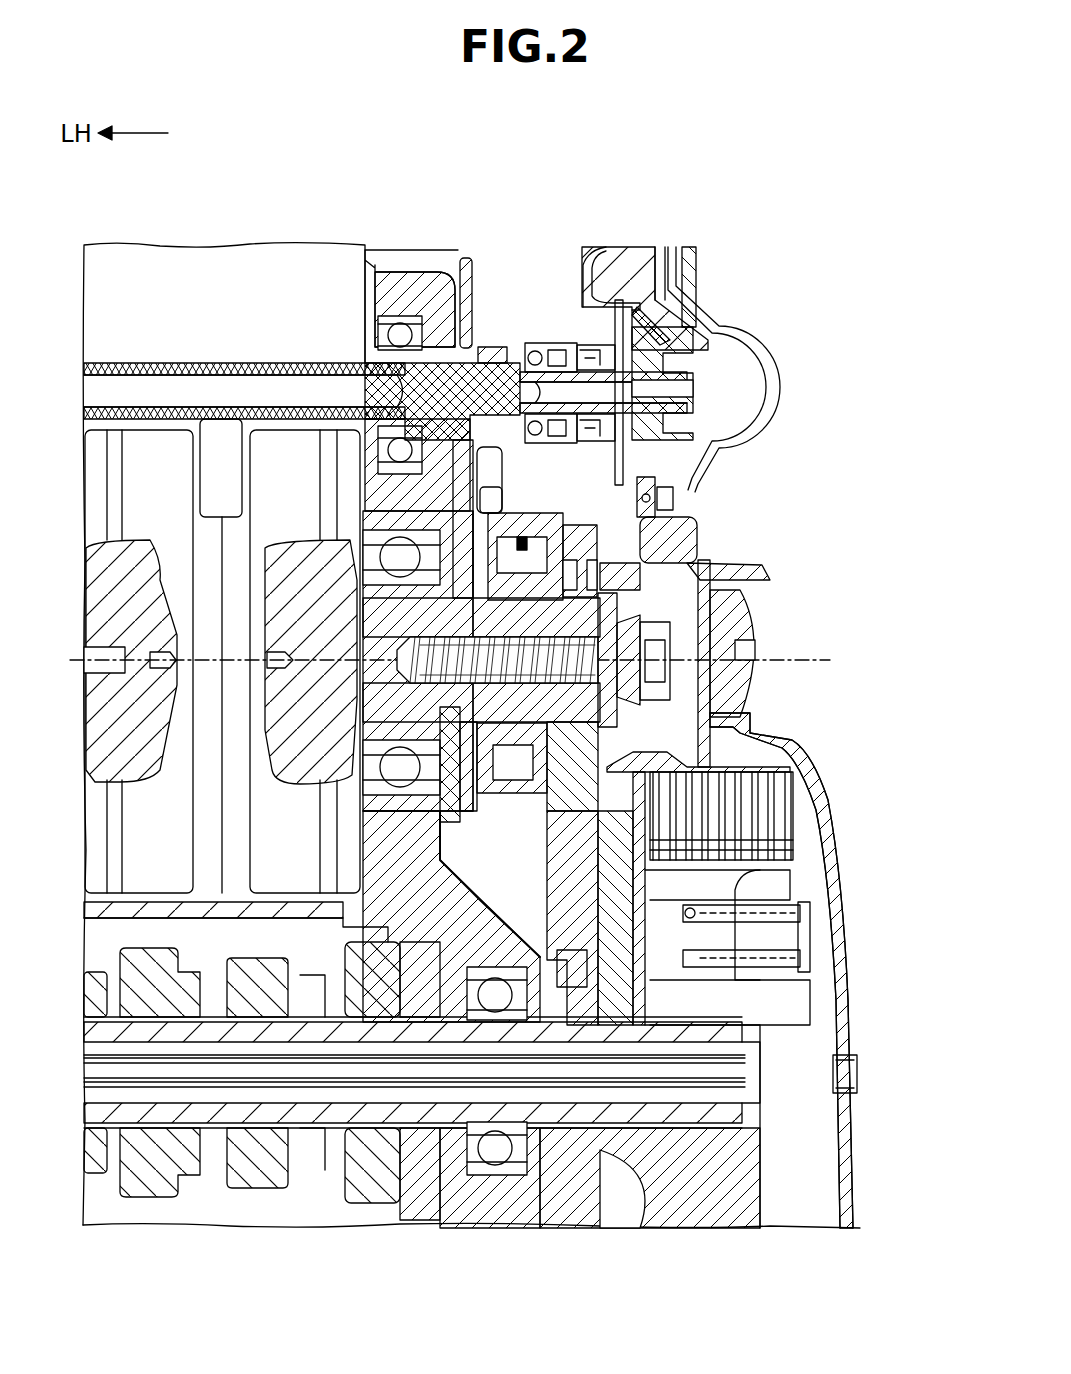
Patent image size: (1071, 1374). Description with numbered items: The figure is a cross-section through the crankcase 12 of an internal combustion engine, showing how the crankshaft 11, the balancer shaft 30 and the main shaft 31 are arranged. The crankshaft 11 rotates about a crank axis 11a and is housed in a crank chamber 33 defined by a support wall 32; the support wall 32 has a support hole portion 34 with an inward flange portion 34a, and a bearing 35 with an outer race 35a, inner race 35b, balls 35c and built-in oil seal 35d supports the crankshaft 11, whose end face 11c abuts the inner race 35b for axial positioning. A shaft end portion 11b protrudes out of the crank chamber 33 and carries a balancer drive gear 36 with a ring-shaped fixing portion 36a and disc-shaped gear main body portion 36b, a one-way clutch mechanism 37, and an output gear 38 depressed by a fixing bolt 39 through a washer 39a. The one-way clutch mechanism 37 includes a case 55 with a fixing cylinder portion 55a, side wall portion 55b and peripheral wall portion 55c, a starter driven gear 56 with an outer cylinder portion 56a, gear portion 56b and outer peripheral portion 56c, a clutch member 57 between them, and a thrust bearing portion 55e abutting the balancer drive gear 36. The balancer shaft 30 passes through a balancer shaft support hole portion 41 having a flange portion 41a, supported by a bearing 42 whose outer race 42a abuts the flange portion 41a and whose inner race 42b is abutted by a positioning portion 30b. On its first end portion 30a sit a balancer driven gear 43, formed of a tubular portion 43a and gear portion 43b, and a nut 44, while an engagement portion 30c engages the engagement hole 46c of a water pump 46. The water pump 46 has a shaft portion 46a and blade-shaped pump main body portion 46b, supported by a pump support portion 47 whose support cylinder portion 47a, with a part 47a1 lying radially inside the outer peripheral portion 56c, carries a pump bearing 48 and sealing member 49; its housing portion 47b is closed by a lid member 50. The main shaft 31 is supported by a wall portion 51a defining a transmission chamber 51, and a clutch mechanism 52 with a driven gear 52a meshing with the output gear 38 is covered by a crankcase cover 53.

The crankshaft 11 is at (307, 522).
The crank axis 11a is at (778, 660).
The shaft end portion 11b is at (578, 697).
The end face 11c is at (395, 650).
The crankcase 12 is at (700, 532).
The balancer shaft 30 is at (338, 352).
The first end portion 30a is at (510, 370).
The positioning portion 30b is at (348, 344).
The engagement portion 30c is at (600, 380).
The main shaft 31 is at (207, 1127).
The support wall 32 is at (360, 463).
The crank chamber 33 is at (170, 455).
The support hole portion 34 is at (345, 800).
The flange portion 34a is at (378, 790).
The bearing 35 is at (353, 737).
The outer race 35a is at (300, 545).
The inner race 35b is at (300, 630).
The balls 35c is at (176, 620).
The oil seal 35d is at (340, 556).
The balancer drive gear 36 is at (452, 810).
The fixing portion 36a is at (150, 660).
The gear main body portion 36b is at (505, 480).
The one-way clutch mechanism 37 is at (846, 880).
The output gear 38 is at (636, 767).
The fixing bolt 39 is at (747, 637).
The washer 39a is at (710, 600).
The balancer shaft support hole portion 41 is at (380, 330).
The flange portion 41a is at (480, 362).
The bearing 42 is at (376, 261).
The outer race 42a is at (398, 316).
The inner race 42b is at (402, 426).
The balancer driven gear 43 is at (491, 281).
The tubular portion 43a is at (520, 350).
The gear portion 43b is at (525, 425).
The nut 44 is at (545, 370).
The water pump 46 is at (697, 302).
The shaft portion 46a is at (652, 330).
The pump main body portion 46b is at (688, 398).
The engagement hole 46c is at (690, 275).
The pump support portion 47 is at (788, 369).
The support cylinder portion 47a is at (770, 400).
The part 47a1 is at (718, 458).
The housing portion 47b is at (773, 387).
The pump bearing 48 is at (585, 345).
The sealing member 49 is at (595, 414).
The lid member 50 is at (717, 337).
The transmission chamber 51 is at (367, 1224).
The wall portion 51a is at (497, 1025).
The clutch mechanism 52 is at (820, 800).
The driven gear 52a is at (812, 948).
The crankcase cover 53 is at (847, 917).
The case 55 is at (730, 520).
The fixing cylinder portion 55a is at (667, 700).
The side wall portion 55b is at (712, 725).
The peripheral wall portion 55c is at (783, 787).
The thrust bearing portion 55e is at (350, 600).
The starter driven gear 56 is at (672, 477).
The outer cylinder portion 56a is at (730, 572).
The gear portion 56b is at (683, 493).
The outer peripheral portion 56c is at (568, 343).
The clutch member 57 is at (560, 545).